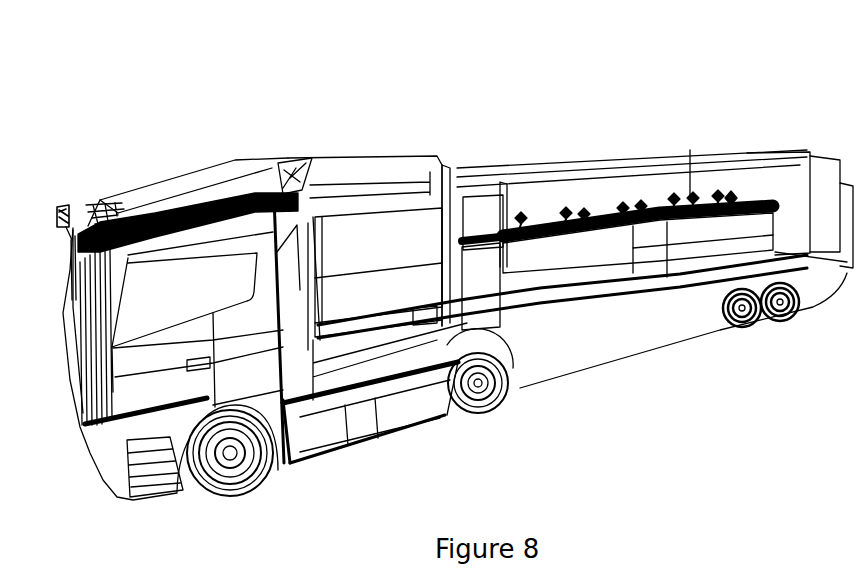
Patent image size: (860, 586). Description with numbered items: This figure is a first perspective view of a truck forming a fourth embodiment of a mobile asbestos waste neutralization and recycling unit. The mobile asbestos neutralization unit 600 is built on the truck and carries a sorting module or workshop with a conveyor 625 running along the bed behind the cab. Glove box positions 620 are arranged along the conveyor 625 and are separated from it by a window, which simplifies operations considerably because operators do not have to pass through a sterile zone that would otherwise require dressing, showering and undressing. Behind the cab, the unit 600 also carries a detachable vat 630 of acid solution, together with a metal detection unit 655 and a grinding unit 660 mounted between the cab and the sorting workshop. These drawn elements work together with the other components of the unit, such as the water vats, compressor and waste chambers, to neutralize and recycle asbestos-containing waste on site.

The mobile asbestos neutralization unit 600 is at (386, 103).
The glove box positions 620 is at (683, 201).
The conveyor 625 is at (605, 227).
The detachable vat 630 is at (352, 293).
The metal detection unit 655 is at (503, 205).
The grinding unit 660 is at (455, 227).